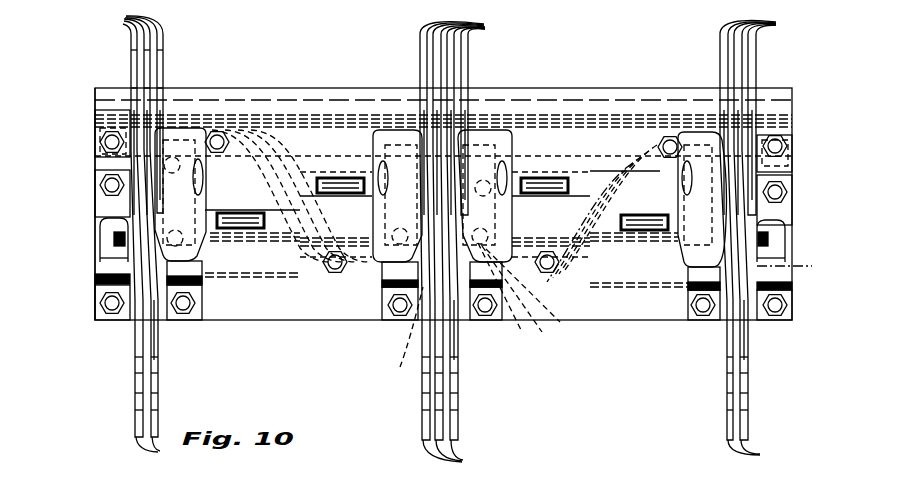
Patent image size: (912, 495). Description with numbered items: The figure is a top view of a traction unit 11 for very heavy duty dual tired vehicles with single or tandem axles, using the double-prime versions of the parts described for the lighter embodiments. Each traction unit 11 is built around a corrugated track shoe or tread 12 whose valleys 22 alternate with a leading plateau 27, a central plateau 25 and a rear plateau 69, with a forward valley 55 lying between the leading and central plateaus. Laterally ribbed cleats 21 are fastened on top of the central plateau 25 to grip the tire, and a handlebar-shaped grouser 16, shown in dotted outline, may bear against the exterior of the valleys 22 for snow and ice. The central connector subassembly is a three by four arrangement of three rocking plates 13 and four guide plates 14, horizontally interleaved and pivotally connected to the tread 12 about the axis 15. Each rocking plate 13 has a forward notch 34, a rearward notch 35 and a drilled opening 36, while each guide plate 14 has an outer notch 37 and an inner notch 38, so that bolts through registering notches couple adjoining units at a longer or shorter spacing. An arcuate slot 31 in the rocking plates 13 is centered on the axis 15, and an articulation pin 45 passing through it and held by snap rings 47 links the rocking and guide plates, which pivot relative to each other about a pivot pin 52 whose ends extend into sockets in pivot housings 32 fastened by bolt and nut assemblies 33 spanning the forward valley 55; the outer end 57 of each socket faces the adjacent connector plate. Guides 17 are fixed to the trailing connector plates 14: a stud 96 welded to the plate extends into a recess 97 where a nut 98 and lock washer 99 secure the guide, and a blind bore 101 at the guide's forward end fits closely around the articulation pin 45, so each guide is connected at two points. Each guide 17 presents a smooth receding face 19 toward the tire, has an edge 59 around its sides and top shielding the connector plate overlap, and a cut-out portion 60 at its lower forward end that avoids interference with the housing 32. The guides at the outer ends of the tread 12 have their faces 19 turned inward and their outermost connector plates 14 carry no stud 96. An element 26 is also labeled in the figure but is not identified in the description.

The traction unit 11 is at (340, 243).
The track shoe or tread 12 is at (640, 90).
The rocking plate 13 is at (460, 454).
The guide plate 14 is at (445, 22).
The axis 15 is at (812, 268).
The grouser 16 is at (622, 148).
The guide 17 is at (190, 130).
The face 19 is at (215, 211).
The cleat 21 is at (322, 183).
The valley 22 is at (328, 142).
The central plateau 25 is at (577, 193).
The end wall 26 is at (96, 88).
The leading plateau 27 is at (298, 308).
The arcuate slot 31 is at (397, 378).
The pivot housing 32 is at (115, 320).
The bolt and nut assembly 33 is at (108, 306).
The forward notch 34 is at (159, 402).
The rearward notch 35 is at (159, 364).
The drilled opening 36 is at (157, 380).
The outer notch 37 is at (131, 53).
The inner notch 38 is at (131, 88).
The articulation pin 45 is at (114, 239).
The snap ring 47 is at (114, 231).
The pivot pin 52 is at (105, 258).
The forward valley 55 is at (627, 268).
The outer end of socket 57 is at (95, 281).
The edge 59 is at (727, 128).
The cut-out portion 60 is at (205, 259).
The rear plateau 69 is at (288, 98).
The stud 96 is at (183, 128).
The recess 97 is at (203, 178).
The nut 98 is at (400, 175).
The lock washer 99 is at (397, 178).
The blind bore 101 is at (482, 248).